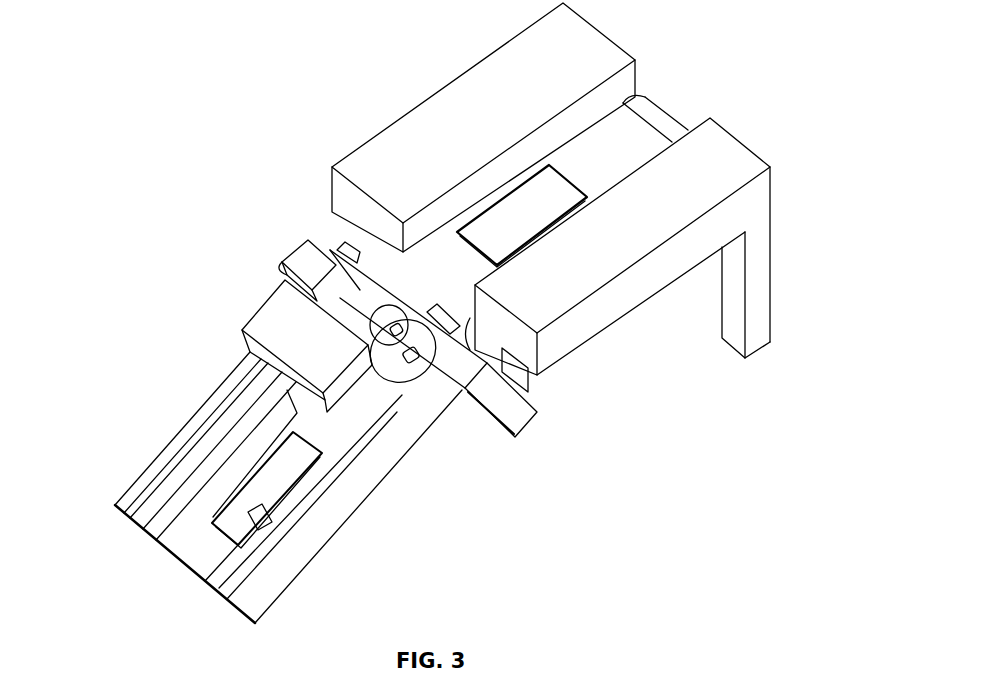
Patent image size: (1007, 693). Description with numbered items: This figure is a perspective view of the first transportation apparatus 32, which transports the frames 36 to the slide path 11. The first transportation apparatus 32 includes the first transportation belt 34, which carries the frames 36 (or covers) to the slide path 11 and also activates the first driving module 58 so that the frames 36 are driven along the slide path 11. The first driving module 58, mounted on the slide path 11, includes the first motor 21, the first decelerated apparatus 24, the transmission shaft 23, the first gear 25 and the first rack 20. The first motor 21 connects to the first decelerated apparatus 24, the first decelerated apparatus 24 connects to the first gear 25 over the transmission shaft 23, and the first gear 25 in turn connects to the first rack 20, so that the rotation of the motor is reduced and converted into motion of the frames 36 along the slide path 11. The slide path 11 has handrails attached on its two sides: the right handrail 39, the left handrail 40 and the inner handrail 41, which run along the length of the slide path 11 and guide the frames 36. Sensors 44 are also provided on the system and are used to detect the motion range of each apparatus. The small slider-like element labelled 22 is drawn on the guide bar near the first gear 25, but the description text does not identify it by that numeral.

The slide path 11 is at (207, 543).
The first rack 20 is at (157, 462).
The first motor 21 is at (312, 263).
The slider 22 is at (310, 402).
The transmission shaft 23 is at (480, 392).
The first decelerated apparatus 24 is at (334, 247).
The first gear 25 is at (400, 368).
The first transportation apparatus 32 is at (627, 210).
The first transportation belt 34 is at (653, 120).
The frames 36 is at (523, 220).
The right handrail 39 is at (275, 578).
The left handrail 40 is at (222, 428).
The inner handrail 41 is at (115, 505).
The sensors 44 is at (527, 375).
The first driving module 58 is at (238, 318).